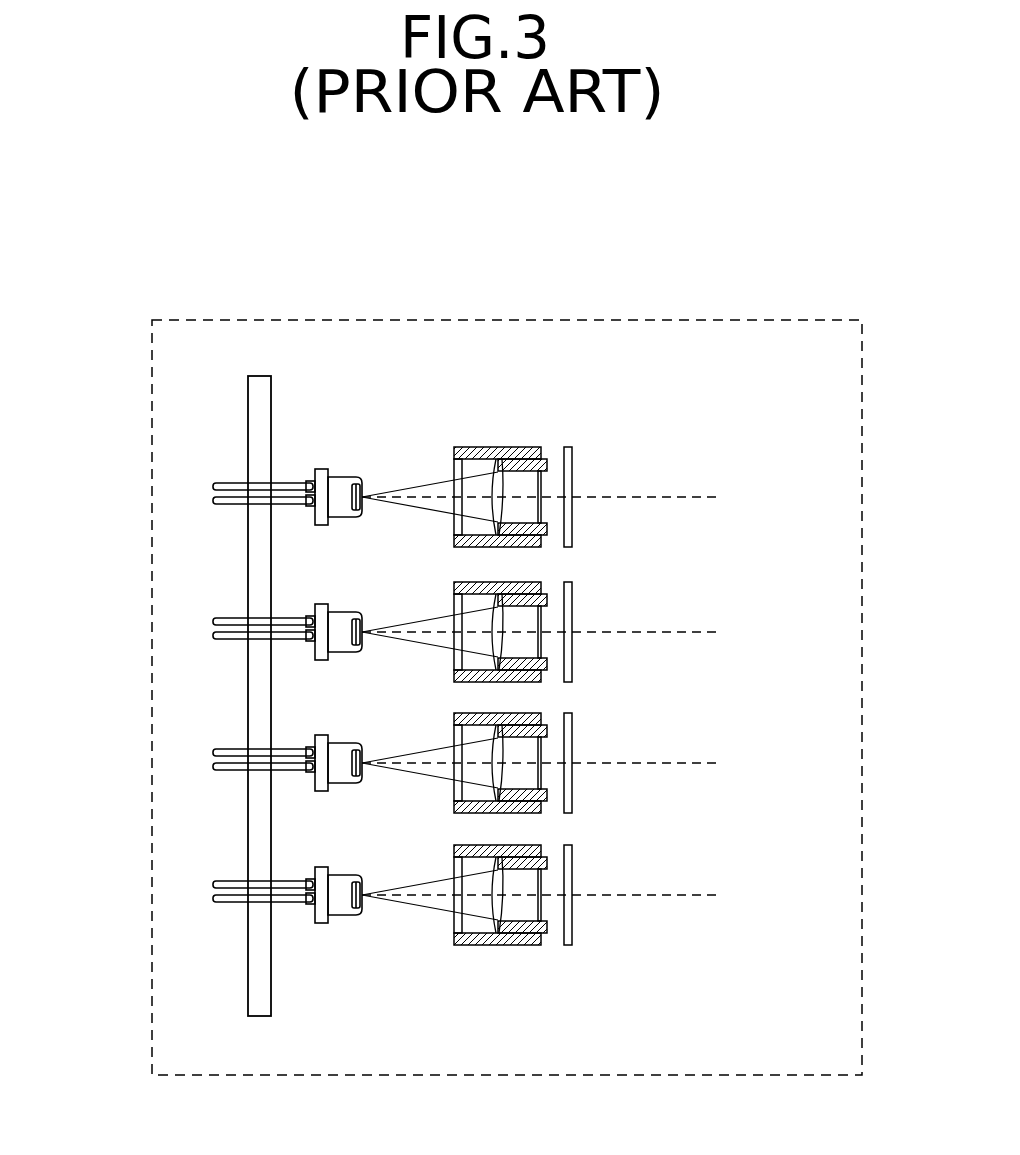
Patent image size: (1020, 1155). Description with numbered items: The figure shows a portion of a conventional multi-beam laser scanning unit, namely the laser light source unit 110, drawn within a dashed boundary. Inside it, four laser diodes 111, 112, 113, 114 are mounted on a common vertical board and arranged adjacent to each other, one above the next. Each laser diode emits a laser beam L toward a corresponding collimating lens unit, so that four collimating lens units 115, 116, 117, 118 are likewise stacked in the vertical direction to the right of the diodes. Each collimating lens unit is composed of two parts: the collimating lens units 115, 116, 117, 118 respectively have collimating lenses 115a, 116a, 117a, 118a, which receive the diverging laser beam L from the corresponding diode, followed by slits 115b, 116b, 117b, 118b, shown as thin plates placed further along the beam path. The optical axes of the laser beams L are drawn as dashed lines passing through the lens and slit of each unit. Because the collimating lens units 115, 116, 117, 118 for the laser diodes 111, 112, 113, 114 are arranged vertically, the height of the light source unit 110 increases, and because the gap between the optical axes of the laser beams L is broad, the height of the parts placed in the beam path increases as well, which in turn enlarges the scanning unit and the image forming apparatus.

The laser light source unit 110 is at (818, 258).
The laser diode 111 is at (343, 477).
The laser diode 112 is at (343, 612).
The laser diode 113 is at (343, 743).
The laser diode 114 is at (343, 875).
The collimating lens unit 115 is at (696, 395).
The collimating lens 115a is at (487, 487).
The slit 115b is at (572, 489).
The collimating lens unit 116 is at (696, 530).
The collimating lens 116a is at (487, 622).
The slit 116b is at (572, 624).
The collimating lens unit 117 is at (696, 661).
The collimating lens 117a is at (487, 753).
The slit 117b is at (572, 755).
The collimating lens unit 118 is at (696, 793).
The collimating lens 118a is at (487, 885).
The slit 118b is at (572, 887).
The laser beam L is at (433, 497).